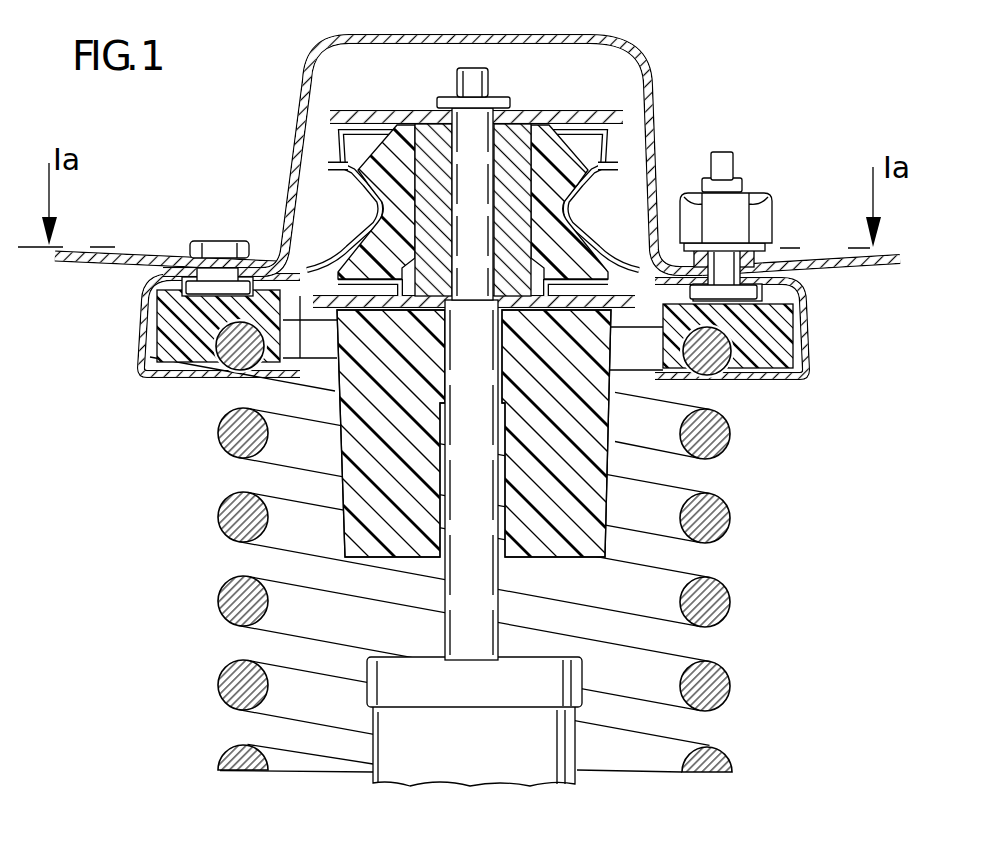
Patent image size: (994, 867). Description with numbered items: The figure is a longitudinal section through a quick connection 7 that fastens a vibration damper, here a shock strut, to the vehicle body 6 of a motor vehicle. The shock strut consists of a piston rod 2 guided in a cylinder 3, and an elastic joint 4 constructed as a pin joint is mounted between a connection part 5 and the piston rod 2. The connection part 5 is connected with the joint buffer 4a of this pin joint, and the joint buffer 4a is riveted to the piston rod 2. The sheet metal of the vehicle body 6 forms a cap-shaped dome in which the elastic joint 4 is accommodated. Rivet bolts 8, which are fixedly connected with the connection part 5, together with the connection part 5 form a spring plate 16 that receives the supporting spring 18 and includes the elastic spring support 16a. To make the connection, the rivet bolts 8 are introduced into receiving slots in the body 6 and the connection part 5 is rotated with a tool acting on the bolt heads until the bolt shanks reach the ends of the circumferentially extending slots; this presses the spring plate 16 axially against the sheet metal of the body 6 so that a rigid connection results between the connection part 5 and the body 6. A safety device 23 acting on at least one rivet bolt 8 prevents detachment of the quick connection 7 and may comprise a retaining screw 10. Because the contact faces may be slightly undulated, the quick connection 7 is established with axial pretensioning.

The piston rod 2 is at (480, 612).
The cylinder 3 is at (528, 757).
The elastic joint 4 is at (318, 137).
The joint buffer 4a is at (540, 130).
The connection part 5 is at (372, 197).
The vehicle body 6 is at (800, 262).
The quick connection 7 is at (196, 227).
The rivet bolts 8 is at (212, 253).
The retaining screw 10 is at (735, 222).
The spring plate 16 is at (784, 281).
The elastic spring support 16a is at (773, 334).
The supporting spring 18 is at (712, 523).
The safety device 23 is at (748, 162).